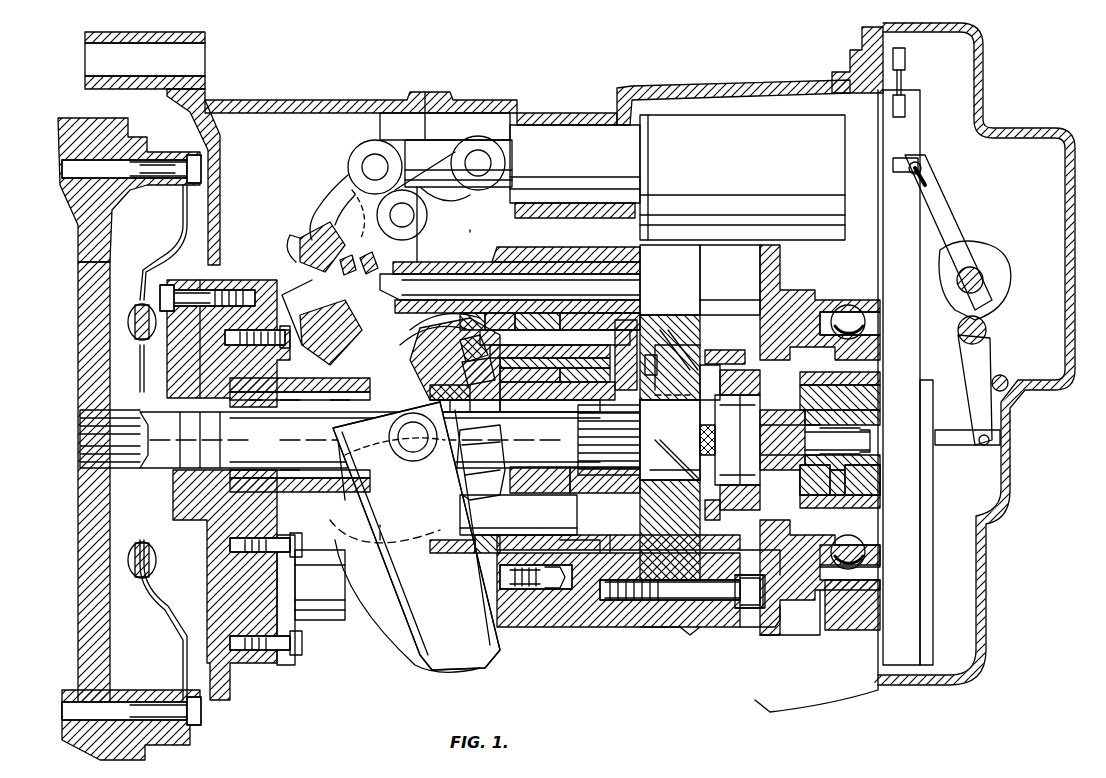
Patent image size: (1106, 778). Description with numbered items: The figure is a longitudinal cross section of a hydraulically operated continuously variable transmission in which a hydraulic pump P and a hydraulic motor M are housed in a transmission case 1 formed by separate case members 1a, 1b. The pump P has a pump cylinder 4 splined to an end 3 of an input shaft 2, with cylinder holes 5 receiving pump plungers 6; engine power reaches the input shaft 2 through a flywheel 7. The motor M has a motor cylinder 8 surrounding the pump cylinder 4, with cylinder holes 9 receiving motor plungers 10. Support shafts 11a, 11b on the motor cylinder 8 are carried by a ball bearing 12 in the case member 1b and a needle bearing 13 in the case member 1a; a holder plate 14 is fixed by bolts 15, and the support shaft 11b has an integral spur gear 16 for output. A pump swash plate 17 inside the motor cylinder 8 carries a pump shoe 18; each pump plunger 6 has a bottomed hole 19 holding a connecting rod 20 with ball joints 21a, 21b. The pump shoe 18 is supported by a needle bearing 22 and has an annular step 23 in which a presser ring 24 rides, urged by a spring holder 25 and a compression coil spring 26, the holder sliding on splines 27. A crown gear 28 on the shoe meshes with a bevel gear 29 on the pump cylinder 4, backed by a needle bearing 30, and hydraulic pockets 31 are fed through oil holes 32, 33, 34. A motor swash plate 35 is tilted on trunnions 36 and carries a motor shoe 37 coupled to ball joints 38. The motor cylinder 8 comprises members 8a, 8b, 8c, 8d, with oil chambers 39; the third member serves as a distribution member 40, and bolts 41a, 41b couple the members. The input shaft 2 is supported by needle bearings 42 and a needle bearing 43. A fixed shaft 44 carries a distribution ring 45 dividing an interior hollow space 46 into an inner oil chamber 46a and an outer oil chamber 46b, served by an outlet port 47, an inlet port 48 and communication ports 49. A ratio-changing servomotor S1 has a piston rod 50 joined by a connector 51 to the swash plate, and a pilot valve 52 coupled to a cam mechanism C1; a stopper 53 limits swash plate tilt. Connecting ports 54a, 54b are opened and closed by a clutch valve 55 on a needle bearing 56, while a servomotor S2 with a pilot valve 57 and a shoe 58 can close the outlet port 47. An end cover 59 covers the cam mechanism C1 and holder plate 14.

The transmission case 1 is at (450, 92).
The case member 1a is at (320, 100).
The case member 1b is at (640, 88).
The input shaft 2 is at (80, 432).
The end of input shaft 3 is at (606, 470).
The pump cylinder 4 is at (540, 545).
The cylinder holes 5 is at (608, 545).
The pump plungers 6 is at (572, 545).
The flywheel 7 is at (85, 596).
The motor cylinder 8 is at (520, 247).
The first member 8a is at (430, 552).
The second member 8b is at (585, 627).
The third member 8c is at (660, 630).
The fourth member 8d is at (750, 628).
The cylinder holes 9 is at (592, 247).
The motor plungers 10 is at (462, 262).
The support shaft 11a is at (796, 345).
The support shaft 11b is at (220, 372).
The ball bearing 12 is at (820, 305).
The needle bearing 13 is at (258, 372).
The holder plate 14 is at (922, 350).
The bolts 15 is at (906, 108).
The spur gear 16 is at (312, 345).
The pump swash plate 17 is at (460, 345).
The pump shoe 18 is at (462, 370).
The bottomed hole 19 is at (560, 382).
The connecting rod 20 is at (590, 382).
The ball joint 21a is at (612, 382).
The ball joint 21b is at (508, 400).
The needle bearing 22 is at (468, 312).
The annular step 23 is at (435, 392).
The presser ring 24 is at (478, 400).
The spring holder 25 is at (502, 437).
The compression coil spring 26 is at (548, 478).
The splines 27 is at (480, 462).
The crown gear 28 is at (500, 312).
The bevel gear 29 is at (535, 312).
The needle bearing 30 is at (585, 312).
The hydraulic pockets 31 is at (430, 332).
The oil holes 32 is at (626, 320).
The oil holes 33 is at (560, 345).
The oil holes 34 is at (455, 312).
The motor swash plate 35 is at (300, 258).
The trunnions 36 is at (405, 450).
The motor shoe 37 is at (352, 262).
The ball joints 38 is at (378, 262).
The oil chambers 39 is at (788, 592).
The distribution member 40 is at (688, 312).
The bolts 41a is at (530, 592).
The bolts 41b is at (690, 628).
The needle bearings 42 is at (340, 404).
The needle bearing 43 is at (670, 447).
The fixed shaft 44 is at (810, 500).
The distribution ring 45 is at (712, 376).
The interior hollow space 46 is at (755, 548).
The inner oil chamber 46a is at (725, 500).
The outer oil chamber 46b is at (729, 348).
The outlet port 47 is at (652, 353).
The inlet port 48 is at (577, 510).
The communication ports 49 is at (685, 345).
The piston rod 50 is at (418, 140).
The connector 51 is at (345, 192).
The pilot valve 52 is at (910, 158).
The stopper 53 is at (330, 622).
The connecting port 54a is at (752, 374).
The connecting port 54b is at (745, 503).
The clutch valve 55 is at (815, 480).
The needle bearing 56 is at (861, 480).
The pilot valve 57 is at (955, 446).
The shoe 58 is at (728, 405).
The end cover 59 is at (1075, 233).
The cam mechanism C1 is at (997, 243).
The hydraulic motor M is at (476, 244).
The hydraulic pump P is at (607, 322).
The ratio-changing servomotor S1 is at (720, 115).
The servomotor S2 is at (860, 404).